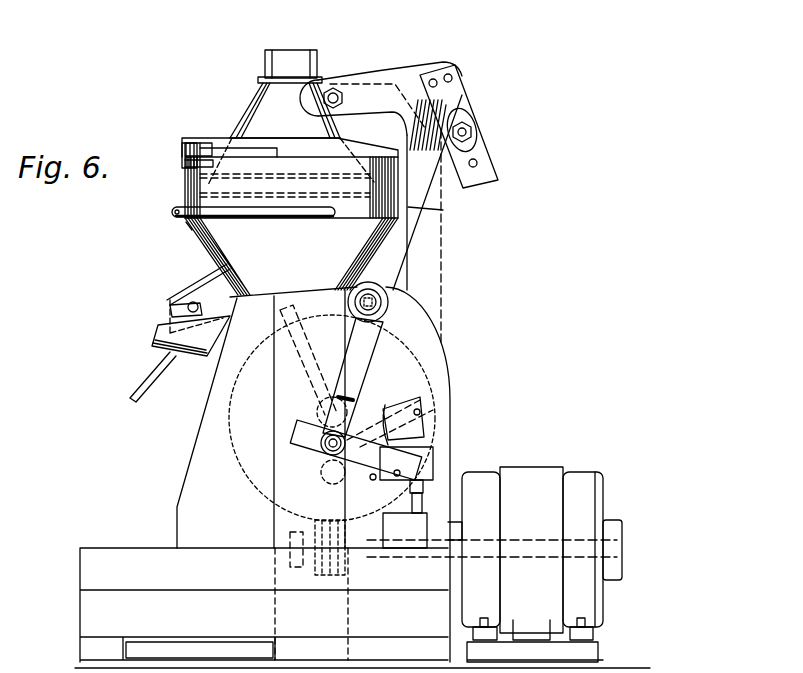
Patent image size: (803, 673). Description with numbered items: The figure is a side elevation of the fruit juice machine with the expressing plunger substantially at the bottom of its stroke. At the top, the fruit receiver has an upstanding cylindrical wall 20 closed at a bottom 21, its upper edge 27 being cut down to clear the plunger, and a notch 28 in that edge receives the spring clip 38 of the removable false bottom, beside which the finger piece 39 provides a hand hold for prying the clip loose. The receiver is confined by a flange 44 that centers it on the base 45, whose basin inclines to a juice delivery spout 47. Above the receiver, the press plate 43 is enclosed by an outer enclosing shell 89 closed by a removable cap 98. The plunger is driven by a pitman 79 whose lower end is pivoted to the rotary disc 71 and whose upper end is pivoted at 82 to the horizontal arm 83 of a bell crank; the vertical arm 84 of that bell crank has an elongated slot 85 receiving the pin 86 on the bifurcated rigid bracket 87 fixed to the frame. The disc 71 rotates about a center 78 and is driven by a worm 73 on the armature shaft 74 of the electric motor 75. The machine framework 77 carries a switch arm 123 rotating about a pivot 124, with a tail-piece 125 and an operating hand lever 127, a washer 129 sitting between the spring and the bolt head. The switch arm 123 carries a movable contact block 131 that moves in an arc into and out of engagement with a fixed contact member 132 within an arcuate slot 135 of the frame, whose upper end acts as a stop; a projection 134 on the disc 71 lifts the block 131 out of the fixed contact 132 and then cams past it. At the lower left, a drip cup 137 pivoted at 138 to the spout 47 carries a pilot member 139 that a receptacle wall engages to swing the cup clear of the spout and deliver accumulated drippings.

The upstanding cylindrical wall 20 is at (185, 188).
The bottom 21 is at (341, 220).
The upper edge 27 is at (181, 136).
The notch 28 is at (190, 141).
The spring clip 38 is at (183, 152).
The finger piece 39 is at (184, 166).
The press plate 43 is at (172, 207).
The flange 44 is at (175, 212).
The base 45 is at (189, 230).
The juice delivery spout 47 is at (170, 305).
The rotary disc 71 is at (430, 410).
The worm 73 is at (330, 578).
The armature shaft 74 is at (283, 551).
The electric motor 75 is at (579, 478).
The framework 77 is at (443, 347).
The center 78 is at (331, 371).
The pitman 79 is at (437, 247).
The pivot 82 is at (337, 88).
The horizontal arm 83 is at (384, 72).
The vertical arm 84 is at (490, 172).
The elongated slot 85 is at (477, 160).
The pin 86 is at (472, 127).
The bifurcated rigid bracket 87 is at (446, 200).
The outer enclosing shell 89 is at (258, 100).
The removable cap 98 is at (272, 51).
The switch arm 123 is at (433, 460).
The pivot 124 is at (337, 457).
The tail-piece 125 is at (316, 458).
The operating hand lever 127 is at (350, 302).
The washer 129 is at (326, 475).
The movable contact block 131 is at (425, 400).
The fixed contact member 132 is at (425, 490).
The projection 134 is at (400, 405).
The arcuate slot 135 is at (418, 393).
The drip cup 137 is at (160, 325).
The pivot 138 is at (193, 300).
The pilot member 139 is at (142, 376).